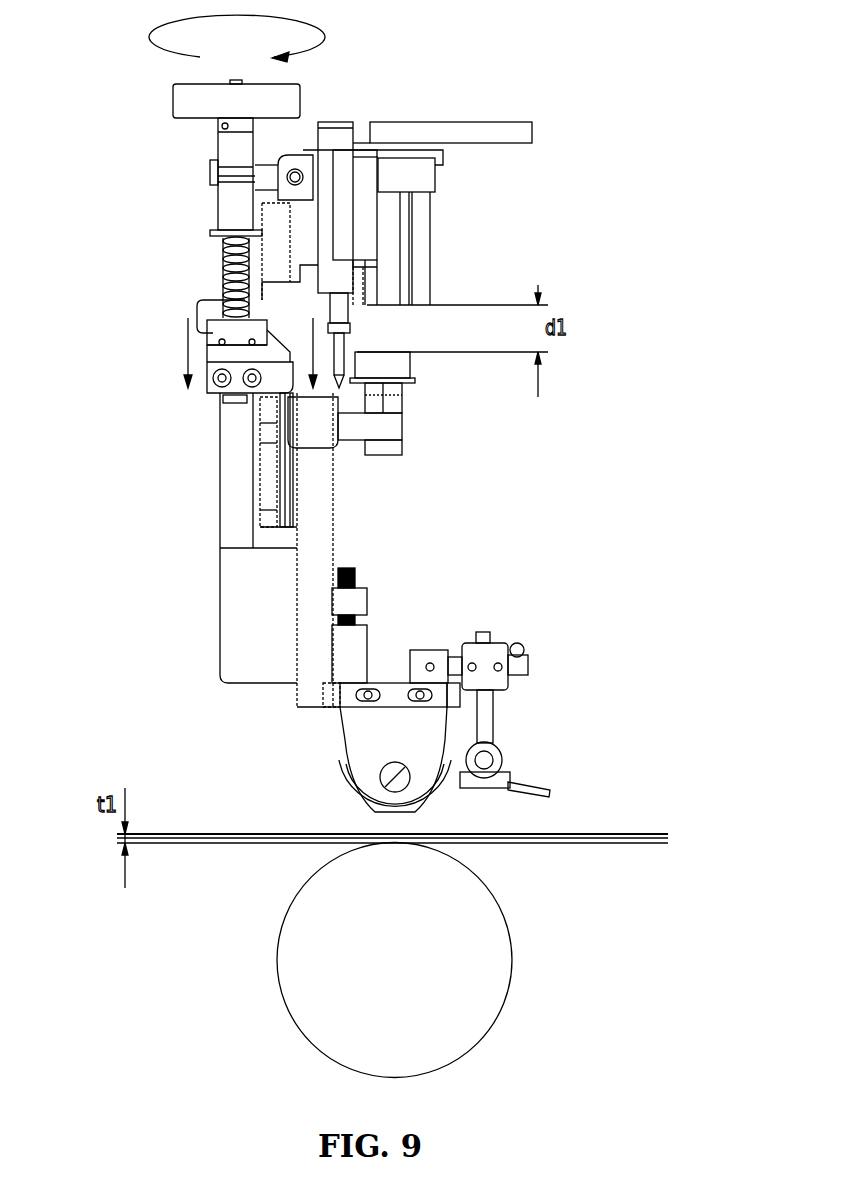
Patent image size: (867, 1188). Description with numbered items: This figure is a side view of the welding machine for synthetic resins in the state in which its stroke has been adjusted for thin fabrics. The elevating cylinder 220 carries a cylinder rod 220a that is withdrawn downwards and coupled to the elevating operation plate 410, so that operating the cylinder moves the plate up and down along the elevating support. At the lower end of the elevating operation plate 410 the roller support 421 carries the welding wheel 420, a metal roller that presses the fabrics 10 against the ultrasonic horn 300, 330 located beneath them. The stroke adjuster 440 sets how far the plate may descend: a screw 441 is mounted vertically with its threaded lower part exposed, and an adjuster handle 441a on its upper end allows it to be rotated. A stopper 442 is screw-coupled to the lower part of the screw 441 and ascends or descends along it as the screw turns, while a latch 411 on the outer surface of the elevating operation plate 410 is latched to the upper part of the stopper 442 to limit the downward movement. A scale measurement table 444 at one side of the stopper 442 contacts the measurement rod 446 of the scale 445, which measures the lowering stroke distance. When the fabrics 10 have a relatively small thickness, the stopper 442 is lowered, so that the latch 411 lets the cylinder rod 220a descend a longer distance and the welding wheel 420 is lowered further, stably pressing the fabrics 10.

The adjuster handle 441a is at (175, 93).
The stroke adjuster 440 is at (165, 262).
The screw 441 is at (227, 257).
The latch 411 is at (200, 305).
The stopper 442 is at (213, 353).
The scale 445 is at (340, 132).
The elevating cylinder 220 is at (417, 217).
The measurement rod 446 is at (357, 323).
The cylinder rod 220a is at (403, 367).
The scale measurement table 444 is at (323, 393).
The elevating operation plate 410 is at (318, 498).
The roller support 421 is at (403, 692).
The welding wheel 420 is at (337, 772).
The fabrics 10 is at (587, 835).
The ultrasonic horn 300 is at (499, 960).
The ultrasonic horn 330 is at (483, 935).